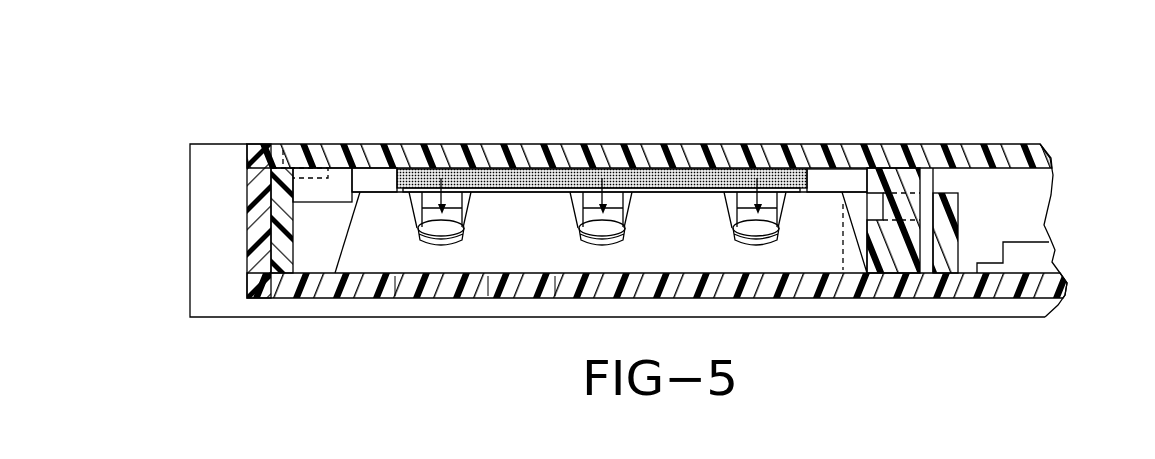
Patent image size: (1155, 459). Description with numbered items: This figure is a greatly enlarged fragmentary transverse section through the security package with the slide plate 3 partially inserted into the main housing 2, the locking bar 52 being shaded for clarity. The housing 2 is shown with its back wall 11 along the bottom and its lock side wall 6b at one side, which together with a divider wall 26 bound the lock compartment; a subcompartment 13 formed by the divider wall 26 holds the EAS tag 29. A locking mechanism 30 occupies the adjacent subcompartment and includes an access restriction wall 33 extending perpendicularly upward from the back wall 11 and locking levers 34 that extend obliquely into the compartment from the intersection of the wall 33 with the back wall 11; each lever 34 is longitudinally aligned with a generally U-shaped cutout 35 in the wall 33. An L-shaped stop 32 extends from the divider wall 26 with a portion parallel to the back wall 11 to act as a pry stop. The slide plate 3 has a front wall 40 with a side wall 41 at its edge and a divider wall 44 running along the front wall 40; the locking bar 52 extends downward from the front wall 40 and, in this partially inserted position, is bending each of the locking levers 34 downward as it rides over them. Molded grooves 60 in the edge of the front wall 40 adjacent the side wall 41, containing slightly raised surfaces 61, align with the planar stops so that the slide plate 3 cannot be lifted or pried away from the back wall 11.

The main housing 2 is at (232, 322).
The slide plate 3 is at (1022, 147).
The lock side wall 6b is at (270, 233).
The back wall 11 is at (997, 297).
The subcompartment 13 is at (1010, 228).
The divider wall 26 is at (953, 213).
The EAS tag 29 is at (1042, 253).
The locking mechanism 30 is at (400, 237).
The L-shaped stop 32 is at (867, 206).
The access restriction wall 33 is at (520, 245).
The locking lever 34 is at (456, 192).
The cutout 35 is at (415, 213).
The front wall 40 is at (533, 148).
The side wall 41 is at (282, 195).
The divider wall 44 is at (903, 257).
The locking bar 52 is at (690, 178).
The groove 60 is at (311, 165).
The raised surface 61 is at (283, 165).